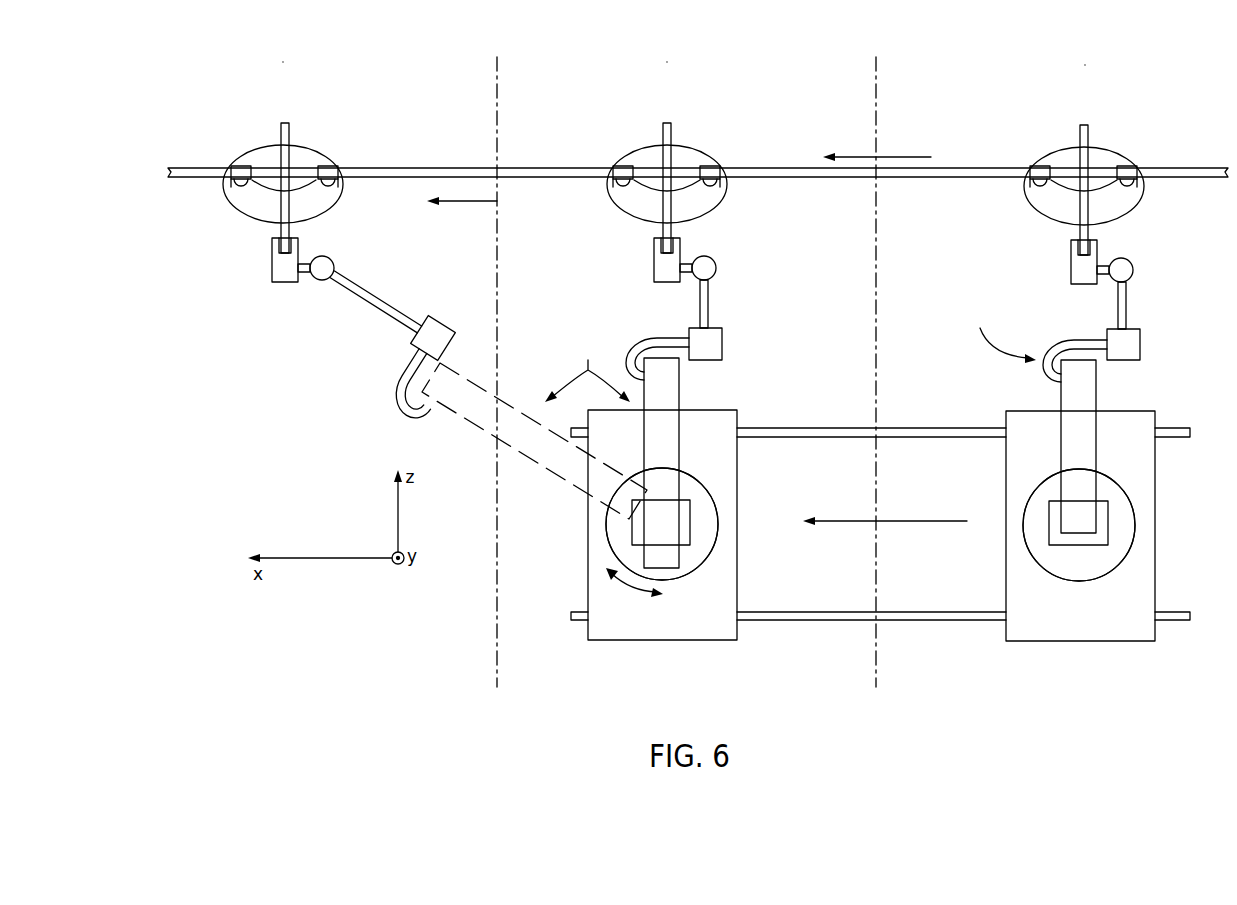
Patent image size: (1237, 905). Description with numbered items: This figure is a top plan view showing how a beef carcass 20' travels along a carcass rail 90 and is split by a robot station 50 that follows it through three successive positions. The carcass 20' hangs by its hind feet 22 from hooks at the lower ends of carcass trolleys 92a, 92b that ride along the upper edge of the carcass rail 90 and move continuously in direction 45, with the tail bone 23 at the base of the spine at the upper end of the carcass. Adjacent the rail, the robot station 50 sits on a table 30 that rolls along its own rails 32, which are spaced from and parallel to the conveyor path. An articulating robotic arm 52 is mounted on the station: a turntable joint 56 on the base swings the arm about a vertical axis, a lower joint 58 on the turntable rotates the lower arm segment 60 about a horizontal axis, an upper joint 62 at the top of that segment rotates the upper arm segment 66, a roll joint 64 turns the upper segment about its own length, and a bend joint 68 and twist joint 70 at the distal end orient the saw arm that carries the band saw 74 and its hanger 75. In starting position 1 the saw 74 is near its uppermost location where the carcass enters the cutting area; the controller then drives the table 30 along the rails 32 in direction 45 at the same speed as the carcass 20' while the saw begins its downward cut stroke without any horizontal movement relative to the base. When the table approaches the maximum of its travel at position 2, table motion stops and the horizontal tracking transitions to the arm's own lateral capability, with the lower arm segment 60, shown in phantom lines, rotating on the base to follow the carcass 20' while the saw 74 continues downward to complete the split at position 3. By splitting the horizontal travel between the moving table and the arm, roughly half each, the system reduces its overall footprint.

The position 1 is at (1085, 60).
The position 2 is at (667, 57).
The position 3 is at (283, 57).
The carcass 20' is at (683, 163).
The hind feet 22 is at (243, 190).
The tail bone 23 is at (290, 192).
The table 30 is at (692, 641).
The rails 32 is at (580, 622).
The direction 45 is at (480, 210).
The robot station 50 is at (730, 503).
The robotic arm 52 is at (790, 353).
The turntable joint 56 is at (692, 488).
The lower joint 58 is at (667, 543).
The lower arm segment 60 is at (537, 392).
The upper joint 62 is at (408, 390).
The roll joint 64 is at (436, 336).
The upper arm segment 66 is at (378, 316).
The bend joint 68 is at (334, 262).
The twist joint 70 is at (308, 272).
The band saw 74 is at (272, 268).
The hanger bar 75 is at (281, 128).
The carcass rail 90 is at (472, 167).
The carcass trolley 92a is at (238, 166).
The carcass trolley 92b is at (330, 166).